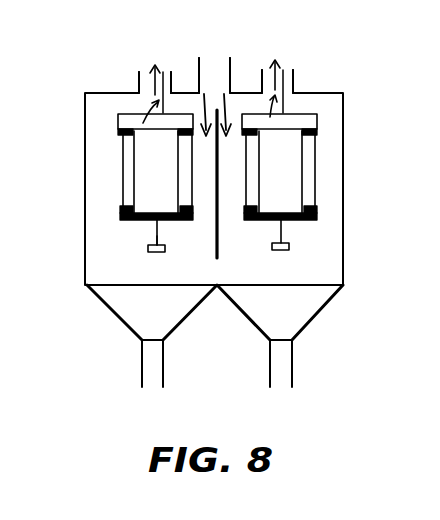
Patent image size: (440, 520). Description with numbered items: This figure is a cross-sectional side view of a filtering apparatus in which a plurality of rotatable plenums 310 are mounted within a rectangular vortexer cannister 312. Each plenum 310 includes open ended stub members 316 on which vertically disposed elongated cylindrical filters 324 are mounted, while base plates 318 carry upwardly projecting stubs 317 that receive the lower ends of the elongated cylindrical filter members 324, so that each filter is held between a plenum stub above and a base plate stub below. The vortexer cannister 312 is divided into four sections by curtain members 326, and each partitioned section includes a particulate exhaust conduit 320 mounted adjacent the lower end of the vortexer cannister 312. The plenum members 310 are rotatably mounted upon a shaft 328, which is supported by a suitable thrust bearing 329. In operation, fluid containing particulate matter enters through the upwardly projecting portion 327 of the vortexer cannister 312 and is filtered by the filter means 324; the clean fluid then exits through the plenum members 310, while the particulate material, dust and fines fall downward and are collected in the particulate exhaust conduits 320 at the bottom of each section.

The rotatable plenum 310 is at (121, 114).
The vortexer cannister 312 is at (85, 190).
The open ended stub member 316 is at (128, 131).
The upwardly projecting stub 317 is at (150, 252).
The base plate 318 is at (310, 225).
The particulate exhaust conduit 320 is at (133, 341).
The elongated cylindrical filter 324 is at (120, 203).
The curtain member 326 is at (193, 98).
The upwardly projecting portion 327 is at (219, 66).
The shaft 328 is at (277, 236).
The thrust bearing 329 is at (152, 240).